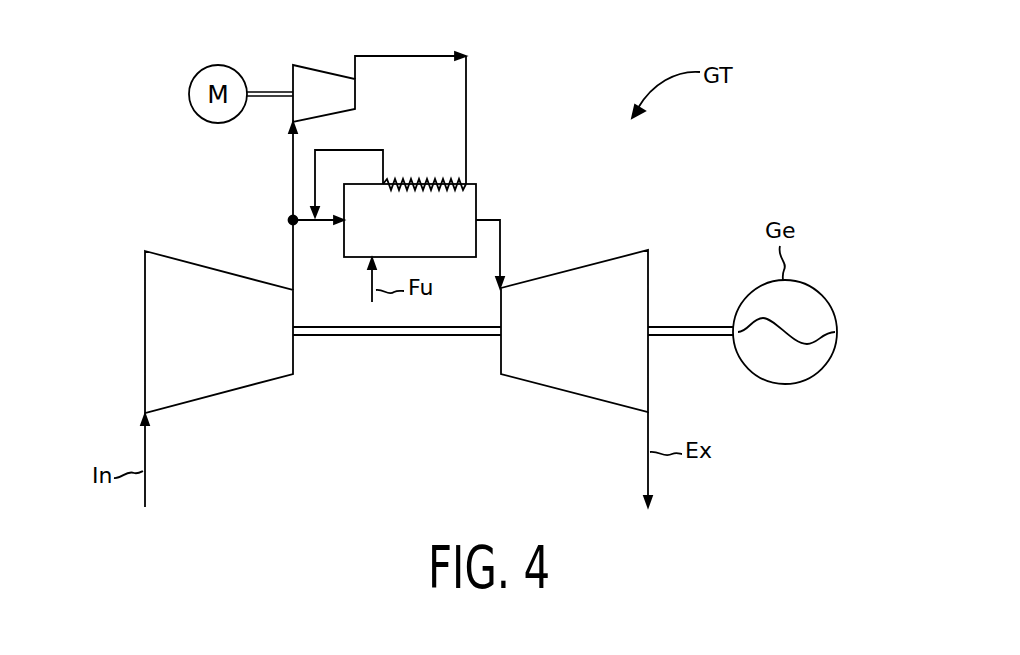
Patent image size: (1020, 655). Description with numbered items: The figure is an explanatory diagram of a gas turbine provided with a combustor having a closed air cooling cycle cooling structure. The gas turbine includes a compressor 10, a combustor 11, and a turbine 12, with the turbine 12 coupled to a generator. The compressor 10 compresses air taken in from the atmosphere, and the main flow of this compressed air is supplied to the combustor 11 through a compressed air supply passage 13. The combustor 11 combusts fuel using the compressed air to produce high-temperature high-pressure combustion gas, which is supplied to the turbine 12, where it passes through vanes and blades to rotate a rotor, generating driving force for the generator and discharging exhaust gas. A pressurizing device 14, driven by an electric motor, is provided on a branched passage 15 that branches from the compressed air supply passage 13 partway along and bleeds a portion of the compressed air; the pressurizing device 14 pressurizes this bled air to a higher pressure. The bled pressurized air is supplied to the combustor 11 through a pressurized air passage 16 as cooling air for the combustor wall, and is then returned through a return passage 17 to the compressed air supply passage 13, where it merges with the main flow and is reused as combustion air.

The compressor 10 is at (227, 394).
The combustor 11 is at (477, 200).
The turbine 12 is at (595, 263).
The compressed air supply passage 13 is at (292, 249).
The pressurizing device 14 is at (321, 66).
The branched passage 15 is at (292, 168).
The pressurized air passage 16 is at (468, 117).
The return passage 17 is at (374, 149).